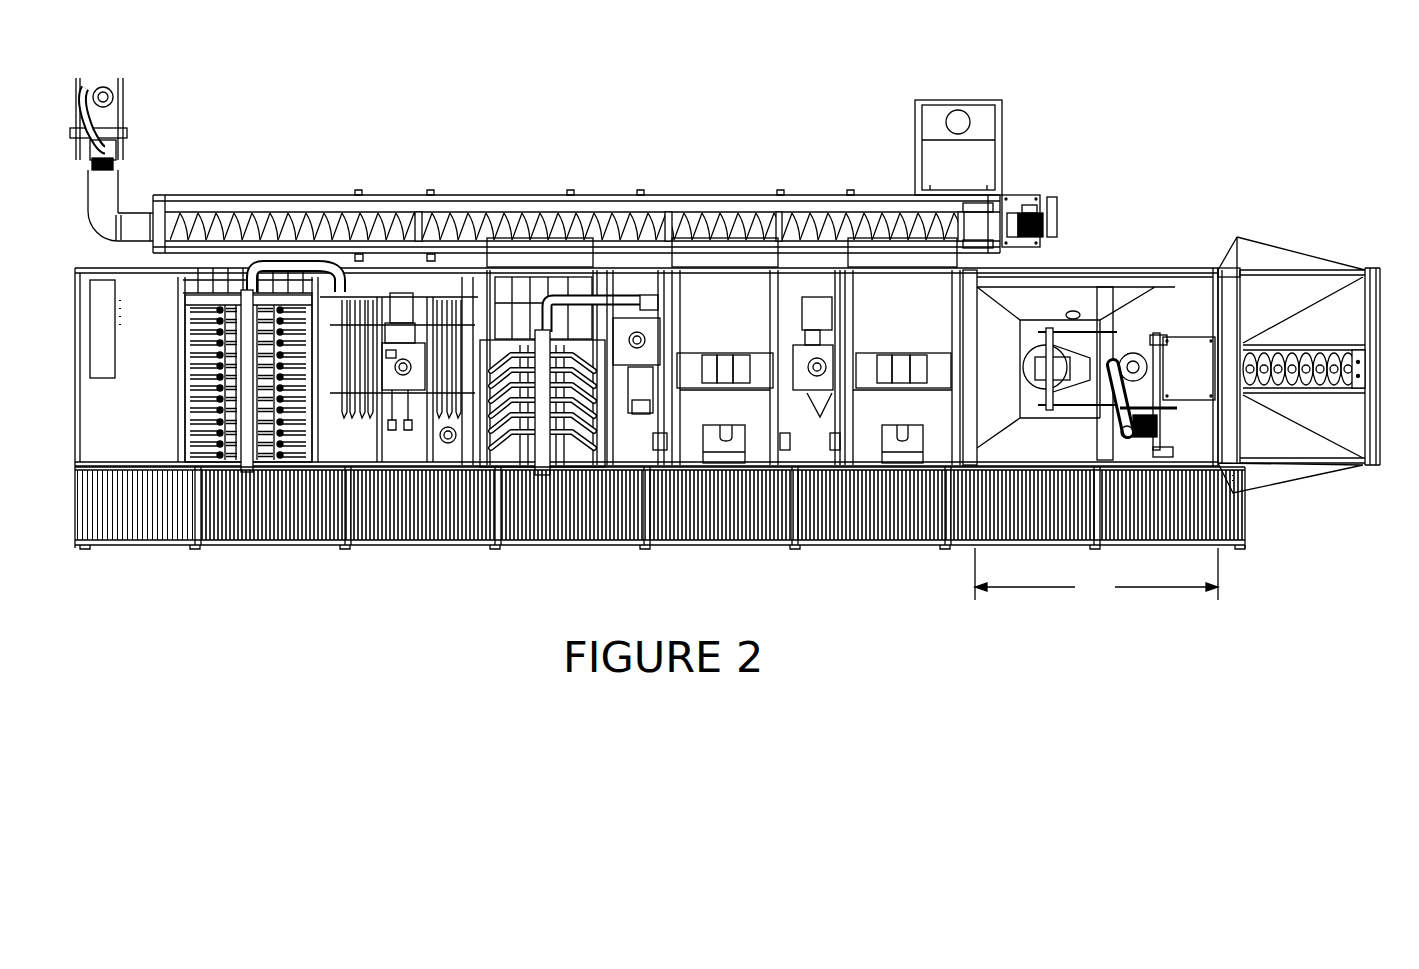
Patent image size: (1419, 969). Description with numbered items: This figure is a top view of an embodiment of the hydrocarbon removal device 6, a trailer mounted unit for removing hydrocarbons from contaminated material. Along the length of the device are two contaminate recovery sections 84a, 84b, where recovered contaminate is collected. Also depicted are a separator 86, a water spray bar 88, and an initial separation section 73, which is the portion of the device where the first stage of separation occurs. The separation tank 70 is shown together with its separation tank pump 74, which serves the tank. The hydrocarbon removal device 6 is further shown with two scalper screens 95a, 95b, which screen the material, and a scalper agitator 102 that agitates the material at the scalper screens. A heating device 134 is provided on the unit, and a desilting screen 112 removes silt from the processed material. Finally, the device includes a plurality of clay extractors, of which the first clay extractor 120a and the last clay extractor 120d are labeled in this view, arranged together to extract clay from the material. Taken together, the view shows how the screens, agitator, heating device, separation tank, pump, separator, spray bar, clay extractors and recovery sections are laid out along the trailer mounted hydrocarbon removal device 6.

The hydrocarbon removal device 6 is at (1286, 137).
The separation tank 70 is at (1025, 297).
The initial separation section 73 is at (1096, 576).
The separation tank pump 74 is at (1038, 348).
The contaminate recovery section 84a is at (1202, 427).
The contaminate recovery section 84b is at (1196, 308).
The separator 86 is at (1150, 306).
The water spray bar 88 is at (966, 374).
The scalper screen 95a is at (897, 293).
The scalper screen 95b is at (722, 292).
The scalper agitator 102 is at (815, 297).
The desilting screen 112 is at (528, 288).
The clay extractor 120a is at (188, 455).
The clay extractor 120d is at (188, 423).
The heating device 134 is at (362, 298).